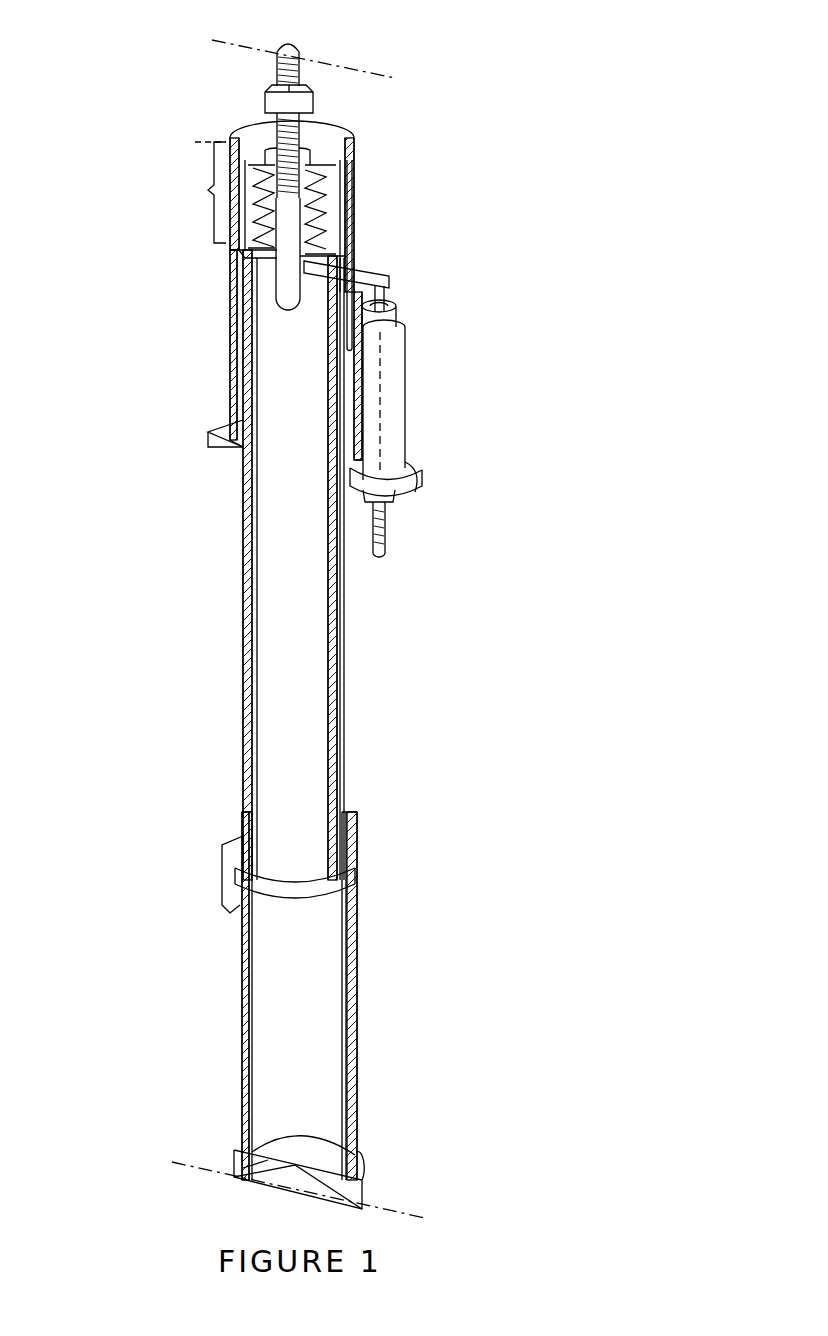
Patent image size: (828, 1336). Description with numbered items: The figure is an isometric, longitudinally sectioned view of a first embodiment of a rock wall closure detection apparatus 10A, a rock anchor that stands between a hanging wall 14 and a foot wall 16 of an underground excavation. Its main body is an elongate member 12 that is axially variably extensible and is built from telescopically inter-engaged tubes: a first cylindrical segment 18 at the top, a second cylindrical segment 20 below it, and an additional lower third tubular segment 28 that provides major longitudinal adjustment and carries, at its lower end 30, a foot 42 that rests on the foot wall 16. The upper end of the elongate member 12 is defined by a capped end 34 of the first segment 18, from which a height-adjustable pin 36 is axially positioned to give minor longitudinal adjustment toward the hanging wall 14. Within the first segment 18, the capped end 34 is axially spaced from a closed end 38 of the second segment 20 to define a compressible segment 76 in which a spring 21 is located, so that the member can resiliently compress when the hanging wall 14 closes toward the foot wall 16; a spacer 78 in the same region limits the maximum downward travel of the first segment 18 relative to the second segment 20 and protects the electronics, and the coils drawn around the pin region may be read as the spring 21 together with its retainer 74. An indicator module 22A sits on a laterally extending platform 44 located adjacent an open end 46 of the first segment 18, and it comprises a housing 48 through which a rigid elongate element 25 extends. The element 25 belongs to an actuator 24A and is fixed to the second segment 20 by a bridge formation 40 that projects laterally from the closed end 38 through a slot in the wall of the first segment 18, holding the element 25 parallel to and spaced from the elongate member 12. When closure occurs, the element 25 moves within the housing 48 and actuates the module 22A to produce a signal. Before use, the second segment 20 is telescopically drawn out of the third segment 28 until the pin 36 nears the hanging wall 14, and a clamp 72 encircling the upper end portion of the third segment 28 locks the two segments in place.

The rock wall closure detection apparatus 10A is at (505, 340).
The elongate member 12 is at (366, 630).
The hanging wall 14 is at (238, 44).
The foot wall 16 is at (403, 1214).
The first cylindrical segment 18 is at (230, 325).
The second cylindrical segment 20 is at (244, 630).
The spring 21 is at (246, 193).
The indicator module 22A is at (416, 348).
The actuator 24A is at (393, 256).
The rigid elongate element 25 is at (388, 300).
The third tubular segment 28 is at (355, 990).
The lower end 30 is at (370, 1150).
The capped end 34 is at (332, 152).
The height-adjustable pin 36 is at (296, 73).
The closed end 38 is at (262, 245).
The bridge formation 40 is at (351, 262).
The foot 42 is at (340, 318).
The laterally extending platform 44 is at (242, 447).
The open end 46 is at (241, 470).
The housing 48 is at (400, 440).
The clamp 72 is at (350, 880).
The spring 74 is at (303, 158).
The compressible segment 76 is at (205, 190).
The spacer 78 is at (247, 173).